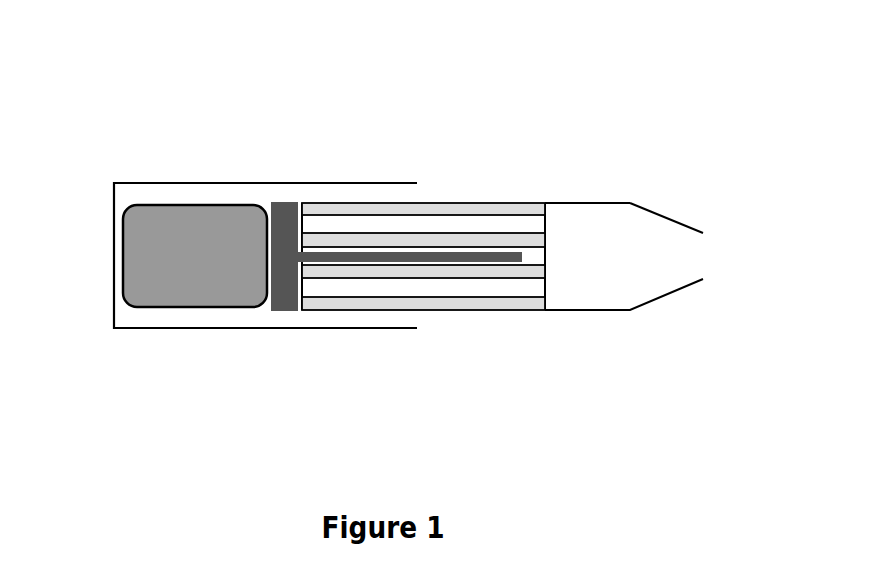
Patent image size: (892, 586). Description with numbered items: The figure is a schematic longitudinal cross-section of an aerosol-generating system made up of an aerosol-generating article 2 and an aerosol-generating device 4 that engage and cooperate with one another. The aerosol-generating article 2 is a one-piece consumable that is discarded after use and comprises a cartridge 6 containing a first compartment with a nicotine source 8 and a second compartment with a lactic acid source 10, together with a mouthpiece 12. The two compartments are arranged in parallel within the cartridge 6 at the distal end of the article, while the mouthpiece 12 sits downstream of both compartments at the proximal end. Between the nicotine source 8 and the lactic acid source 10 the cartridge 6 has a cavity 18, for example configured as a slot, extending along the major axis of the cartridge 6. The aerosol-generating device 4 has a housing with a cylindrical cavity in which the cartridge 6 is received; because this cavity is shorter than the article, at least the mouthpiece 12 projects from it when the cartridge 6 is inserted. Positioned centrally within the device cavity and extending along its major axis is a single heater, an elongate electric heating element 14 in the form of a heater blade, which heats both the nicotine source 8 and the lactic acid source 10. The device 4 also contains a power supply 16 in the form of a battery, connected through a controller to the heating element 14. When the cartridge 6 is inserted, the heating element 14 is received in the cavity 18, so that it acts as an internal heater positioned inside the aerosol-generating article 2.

The aerosol-generating article 2 is at (590, 193).
The aerosol-generating device 4 is at (137, 160).
The cartridge 6 is at (500, 197).
The nicotine source 8 is at (460, 283).
The lactic acid source 10 is at (400, 226).
The mouthpiece 12 is at (632, 247).
The elongate electric heating element 14 is at (410, 257).
The power supply 16 is at (197, 245).
The cavity 18 is at (530, 253).